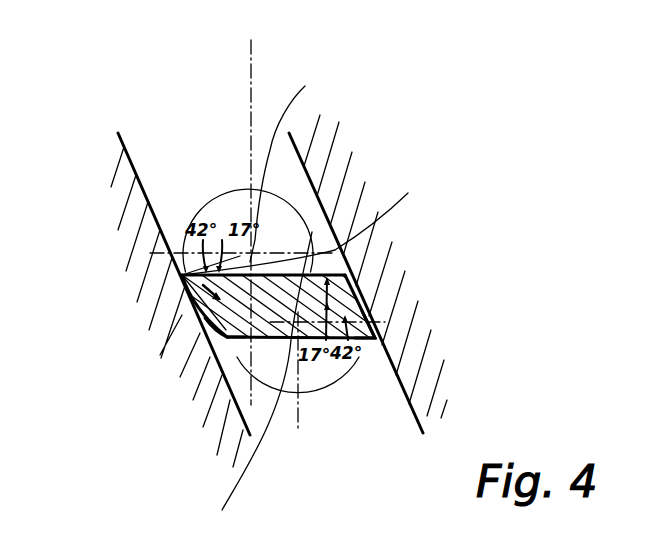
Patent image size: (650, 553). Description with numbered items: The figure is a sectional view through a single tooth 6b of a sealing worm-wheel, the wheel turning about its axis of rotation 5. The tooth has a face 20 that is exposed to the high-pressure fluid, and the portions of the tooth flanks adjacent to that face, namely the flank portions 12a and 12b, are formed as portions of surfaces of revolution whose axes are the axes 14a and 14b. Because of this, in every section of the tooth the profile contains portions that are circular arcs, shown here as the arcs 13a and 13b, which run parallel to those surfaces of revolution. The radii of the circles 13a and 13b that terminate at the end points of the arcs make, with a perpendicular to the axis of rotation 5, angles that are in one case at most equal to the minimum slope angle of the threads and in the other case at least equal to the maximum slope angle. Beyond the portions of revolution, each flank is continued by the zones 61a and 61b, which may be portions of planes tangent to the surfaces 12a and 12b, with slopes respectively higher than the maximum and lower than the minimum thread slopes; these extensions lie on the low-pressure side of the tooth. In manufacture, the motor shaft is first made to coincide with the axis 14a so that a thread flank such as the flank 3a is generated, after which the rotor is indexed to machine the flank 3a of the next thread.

The axis of rotation 5 is at (253, 77).
The thread flank 3a is at (132, 237).
The tooth face 20 is at (340, 190).
The axis of surface of revolution 14a is at (300, 163).
The axis of surface of revolution 14b is at (243, 386).
The circular arc 13a is at (218, 192).
The circular arc 13b is at (328, 390).
The tooth flank portion 12a is at (190, 302).
The tooth flank portion 12b is at (360, 287).
The tooth 6b is at (312, 221).
The flank extension zone 61a is at (222, 334).
The flank extension zone 61b is at (365, 335).